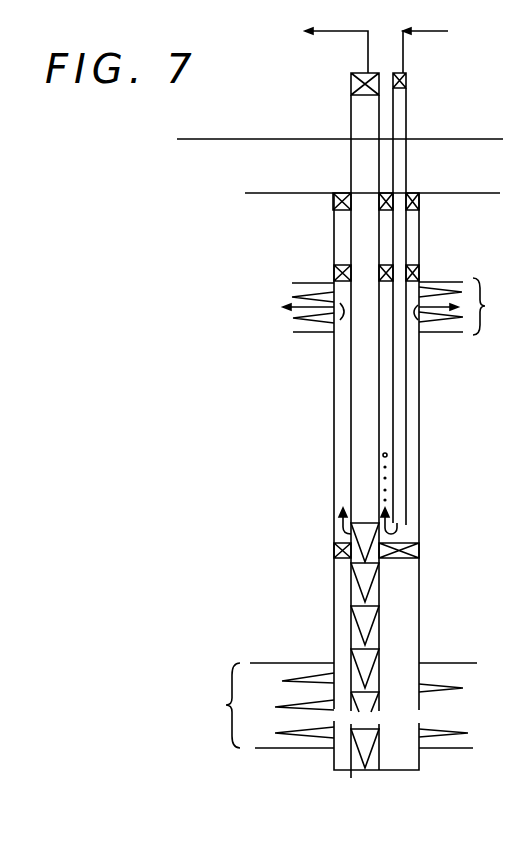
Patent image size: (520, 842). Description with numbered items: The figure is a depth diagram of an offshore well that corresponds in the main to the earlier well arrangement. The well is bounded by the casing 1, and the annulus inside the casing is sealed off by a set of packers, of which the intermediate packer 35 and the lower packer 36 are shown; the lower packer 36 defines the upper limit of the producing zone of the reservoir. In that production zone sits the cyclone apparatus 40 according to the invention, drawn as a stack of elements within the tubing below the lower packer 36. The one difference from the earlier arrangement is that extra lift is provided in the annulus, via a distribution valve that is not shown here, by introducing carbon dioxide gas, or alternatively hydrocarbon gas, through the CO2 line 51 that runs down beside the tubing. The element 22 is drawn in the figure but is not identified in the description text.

The casing 1 is at (419, 490).
The production tubing 22 is at (387, 433).
The intermediate packer 35 is at (419, 276).
The lower packer 36 is at (420, 548).
The cyclone apparatus 40 is at (367, 627).
The CO2 line 51 is at (402, 403).